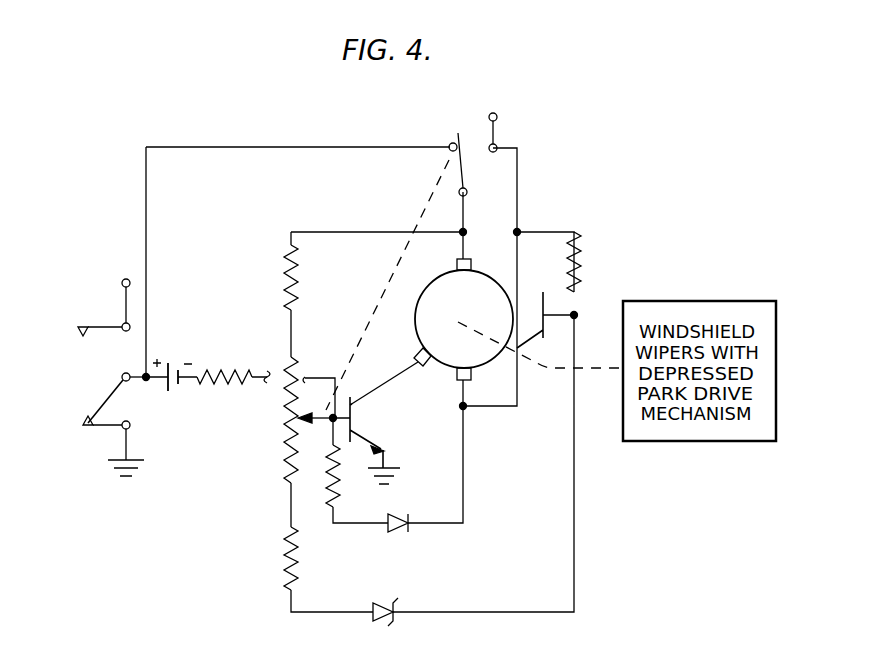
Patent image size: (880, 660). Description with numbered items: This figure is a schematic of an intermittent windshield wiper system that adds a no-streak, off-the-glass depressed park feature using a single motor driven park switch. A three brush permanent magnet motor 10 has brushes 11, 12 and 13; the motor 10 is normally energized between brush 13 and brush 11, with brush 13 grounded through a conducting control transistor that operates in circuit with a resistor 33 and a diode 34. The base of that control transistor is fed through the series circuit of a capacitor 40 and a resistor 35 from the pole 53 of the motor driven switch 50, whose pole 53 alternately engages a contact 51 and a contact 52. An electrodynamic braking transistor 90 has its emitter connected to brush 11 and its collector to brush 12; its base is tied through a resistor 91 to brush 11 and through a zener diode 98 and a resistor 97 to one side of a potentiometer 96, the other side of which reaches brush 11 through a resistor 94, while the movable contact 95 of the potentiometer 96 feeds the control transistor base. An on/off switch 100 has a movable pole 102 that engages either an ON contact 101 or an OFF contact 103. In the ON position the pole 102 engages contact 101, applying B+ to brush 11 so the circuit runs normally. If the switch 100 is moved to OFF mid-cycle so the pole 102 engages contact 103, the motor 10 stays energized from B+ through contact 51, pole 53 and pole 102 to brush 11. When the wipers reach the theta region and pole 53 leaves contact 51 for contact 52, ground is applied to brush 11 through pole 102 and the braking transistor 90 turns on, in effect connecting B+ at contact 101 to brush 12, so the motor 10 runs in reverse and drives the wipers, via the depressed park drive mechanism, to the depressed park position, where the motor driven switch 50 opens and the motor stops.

The three brush permanent magnet motor 10 is at (477, 313).
The brush 11 is at (457, 263).
The brush 12 is at (458, 378).
The brush 13 is at (420, 352).
The resistor 33 is at (340, 481).
The diode 34 is at (405, 513).
The resistor 35 is at (224, 372).
The capacitor 40 is at (175, 353).
The motor driven switch 50 is at (110, 368).
The contact 51 is at (97, 327).
The contact 52 is at (99, 428).
The pole 53 is at (90, 413).
The electrodynamic braking transistor 90 is at (540, 298).
The resistor 91 is at (578, 270).
The resistor 94 is at (283, 275).
The movable contact 95 is at (306, 410).
The potentiometer 96 is at (283, 427).
The resistor 97 is at (298, 560).
The zener diode 98 is at (386, 599).
The on/off switch 100 is at (472, 137).
The contact 101 is at (494, 132).
The movable pole 102 is at (466, 175).
The contact 103 is at (448, 143).